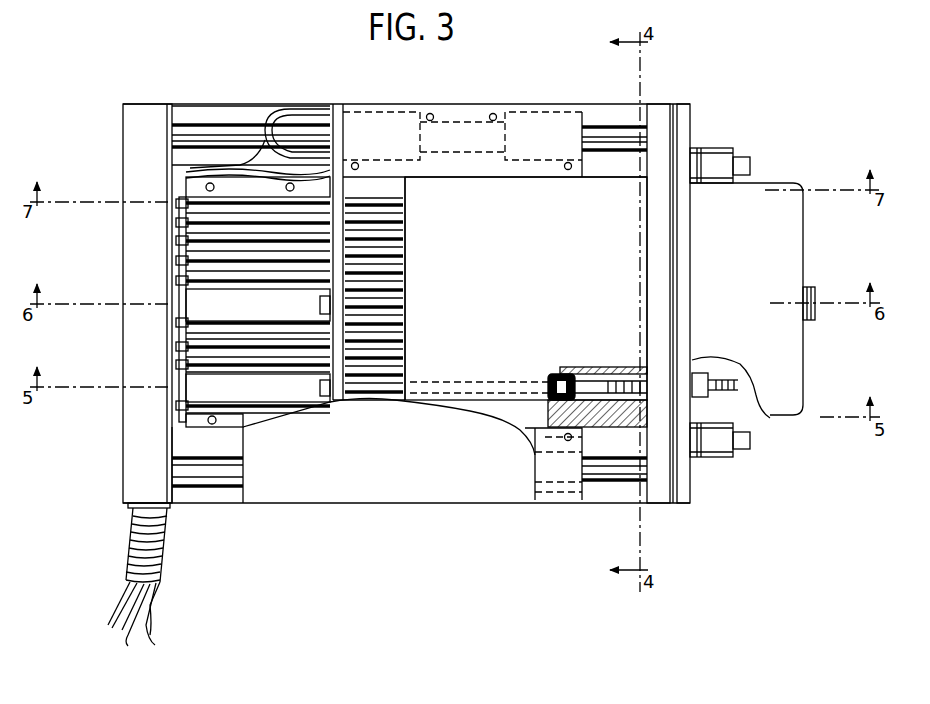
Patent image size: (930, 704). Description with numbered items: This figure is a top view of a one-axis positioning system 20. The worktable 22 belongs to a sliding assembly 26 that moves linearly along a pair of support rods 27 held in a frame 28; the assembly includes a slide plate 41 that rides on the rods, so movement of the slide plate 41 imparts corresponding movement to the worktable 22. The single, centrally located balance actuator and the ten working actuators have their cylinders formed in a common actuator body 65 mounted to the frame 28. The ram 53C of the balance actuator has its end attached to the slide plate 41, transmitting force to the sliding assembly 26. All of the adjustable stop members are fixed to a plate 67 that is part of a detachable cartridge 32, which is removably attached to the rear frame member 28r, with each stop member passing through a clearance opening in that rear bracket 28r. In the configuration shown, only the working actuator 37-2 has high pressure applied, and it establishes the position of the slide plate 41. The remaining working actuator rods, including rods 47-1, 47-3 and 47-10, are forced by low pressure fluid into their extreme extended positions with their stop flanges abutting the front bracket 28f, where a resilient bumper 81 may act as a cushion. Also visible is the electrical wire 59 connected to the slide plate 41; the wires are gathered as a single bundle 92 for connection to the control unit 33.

The positioning system 20 is at (120, 446).
The worktable 22 is at (398, 482).
The sliding assembly 26 is at (465, 118).
The support rods 27 is at (242, 128).
The frame 28 is at (212, 116).
The front bracket 28f is at (150, 116).
The rear frame member 28r is at (658, 487).
The detachable cartridge 32 is at (812, 386).
The control unit 33 is at (119, 666).
The working actuator 37-2 is at (610, 361).
The slide plate 41 is at (337, 104).
The working actuator rod 47-1 is at (258, 383).
The working actuator rod 47-3 is at (258, 268).
The working actuator rod 47-10 is at (190, 188).
The ram 53C is at (390, 303).
The electrical wire 59 is at (290, 108).
The actuator body 65 is at (607, 236).
The plate 67 is at (683, 487).
The resilient bumper 81 is at (172, 491).
The bundle 92 is at (162, 560).